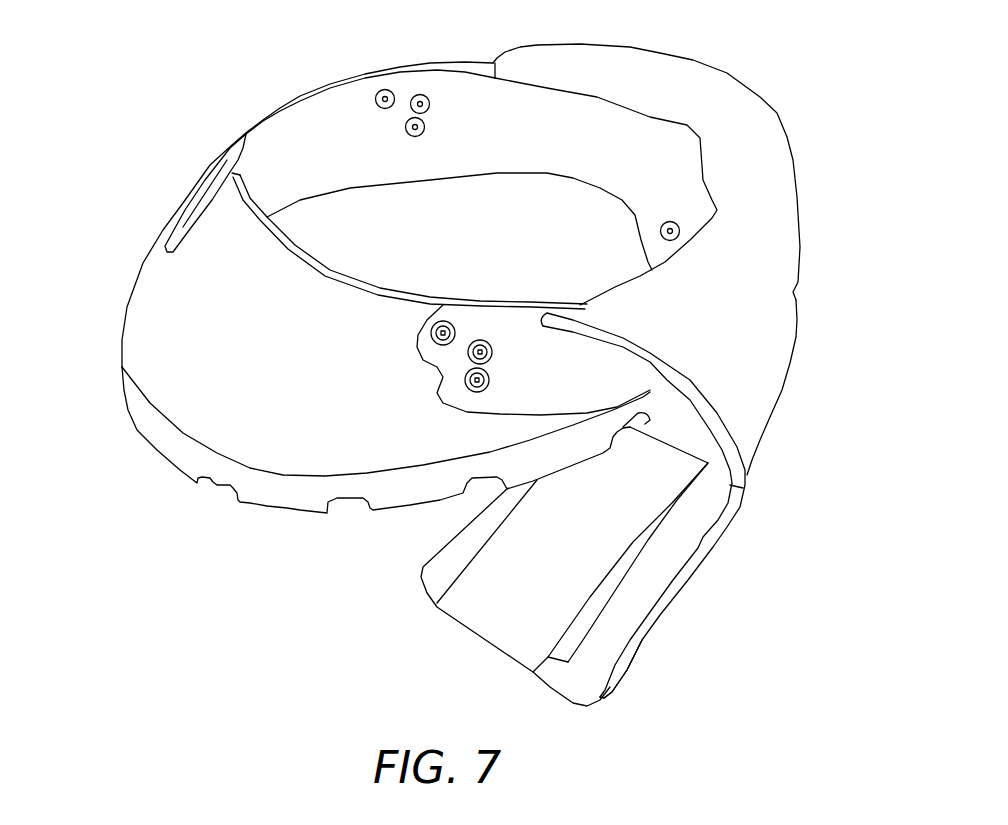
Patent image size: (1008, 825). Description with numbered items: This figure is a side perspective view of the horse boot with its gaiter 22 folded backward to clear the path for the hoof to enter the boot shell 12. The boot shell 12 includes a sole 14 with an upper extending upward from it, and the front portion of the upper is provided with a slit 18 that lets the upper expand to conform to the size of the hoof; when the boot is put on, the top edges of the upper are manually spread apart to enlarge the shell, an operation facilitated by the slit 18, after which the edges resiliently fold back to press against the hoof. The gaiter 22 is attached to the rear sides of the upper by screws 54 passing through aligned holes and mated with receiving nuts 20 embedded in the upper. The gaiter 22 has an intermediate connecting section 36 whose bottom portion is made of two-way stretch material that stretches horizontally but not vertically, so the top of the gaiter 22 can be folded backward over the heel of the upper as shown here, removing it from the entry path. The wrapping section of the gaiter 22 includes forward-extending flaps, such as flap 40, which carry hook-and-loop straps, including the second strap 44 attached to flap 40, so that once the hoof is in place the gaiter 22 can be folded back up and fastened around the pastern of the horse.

The boot shell 12 is at (131, 258).
The sole 14 is at (288, 500).
The slit 18 is at (231, 172).
The receiving nuts 20 is at (378, 108).
The gaiter 22 is at (796, 133).
The connecting section 36 is at (790, 283).
The flap 40 is at (610, 650).
The second strap 44 is at (480, 623).
The screws 54 is at (430, 333).